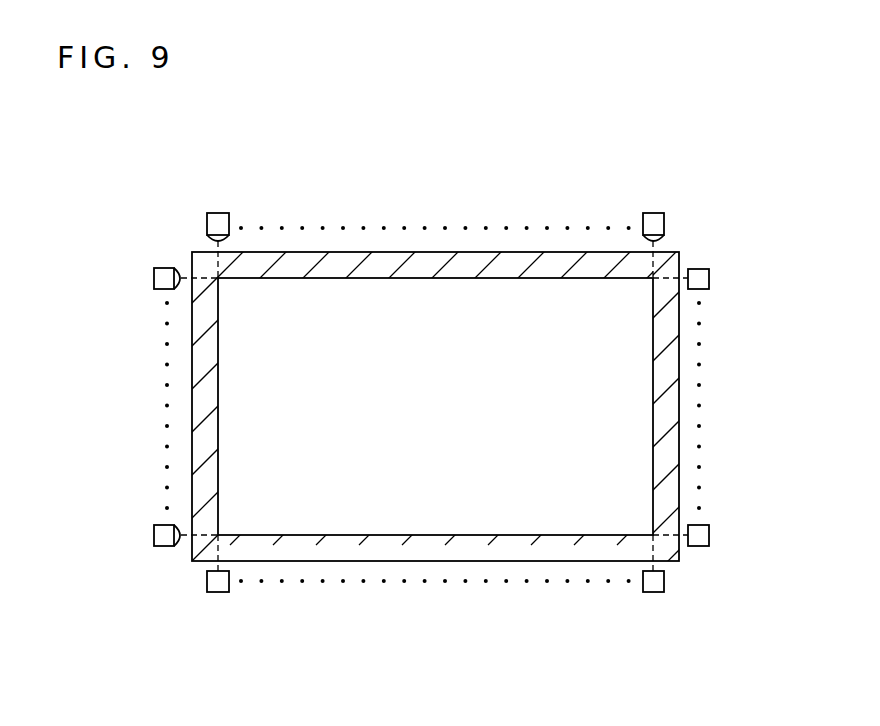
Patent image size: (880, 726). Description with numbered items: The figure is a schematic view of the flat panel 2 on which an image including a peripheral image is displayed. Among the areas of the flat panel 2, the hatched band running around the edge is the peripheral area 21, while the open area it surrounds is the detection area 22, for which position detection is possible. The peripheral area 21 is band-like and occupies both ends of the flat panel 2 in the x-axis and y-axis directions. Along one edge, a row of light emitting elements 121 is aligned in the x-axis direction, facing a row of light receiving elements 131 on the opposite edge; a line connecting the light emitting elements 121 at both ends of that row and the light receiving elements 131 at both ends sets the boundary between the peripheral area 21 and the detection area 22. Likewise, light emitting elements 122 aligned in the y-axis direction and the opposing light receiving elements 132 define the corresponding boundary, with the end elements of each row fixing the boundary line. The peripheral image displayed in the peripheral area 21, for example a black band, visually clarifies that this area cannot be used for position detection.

The flat panel 2 is at (435, 469).
The peripheral area 21 is at (390, 553).
The detection area 22 is at (426, 512).
The light emitting elements 121 is at (218, 212).
The light emitting elements 122 is at (153, 274).
The light receiving elements 131 is at (218, 593).
The light receiving elements 132 is at (710, 278).